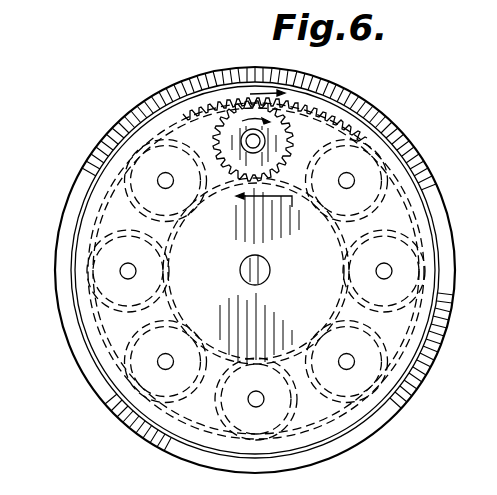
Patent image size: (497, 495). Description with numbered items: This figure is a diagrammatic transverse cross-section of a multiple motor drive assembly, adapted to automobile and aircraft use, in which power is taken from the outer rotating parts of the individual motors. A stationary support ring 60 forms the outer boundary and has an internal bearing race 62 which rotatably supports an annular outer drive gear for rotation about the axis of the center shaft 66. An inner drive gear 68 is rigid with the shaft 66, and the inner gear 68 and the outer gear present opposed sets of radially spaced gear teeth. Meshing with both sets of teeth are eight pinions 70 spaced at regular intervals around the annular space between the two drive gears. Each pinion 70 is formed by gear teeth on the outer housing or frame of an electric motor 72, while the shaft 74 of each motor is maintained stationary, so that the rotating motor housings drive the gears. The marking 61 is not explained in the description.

The stationary support ring 60 is at (163, 90).
The internal bearing race 62 is at (100, 173).
The pinions 70 is at (320, 143).
The electric motor 72 is at (212, 124).
The motor shaft 74 is at (250, 147).
The center shaft 66 is at (270, 268).
The inner drive gear 68 is at (282, 374).
The casing section 61 is at (42, 348).